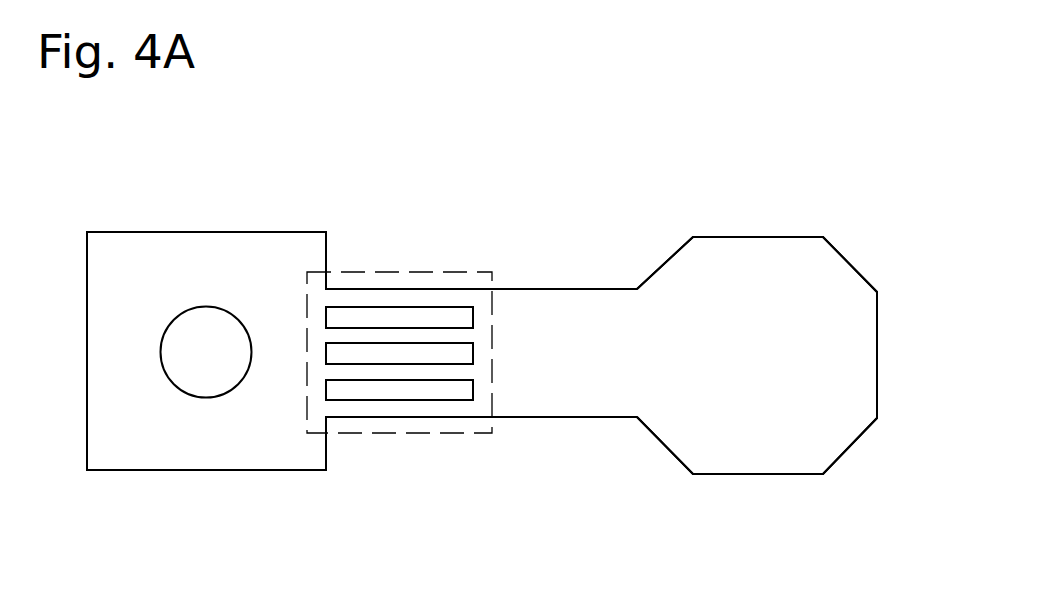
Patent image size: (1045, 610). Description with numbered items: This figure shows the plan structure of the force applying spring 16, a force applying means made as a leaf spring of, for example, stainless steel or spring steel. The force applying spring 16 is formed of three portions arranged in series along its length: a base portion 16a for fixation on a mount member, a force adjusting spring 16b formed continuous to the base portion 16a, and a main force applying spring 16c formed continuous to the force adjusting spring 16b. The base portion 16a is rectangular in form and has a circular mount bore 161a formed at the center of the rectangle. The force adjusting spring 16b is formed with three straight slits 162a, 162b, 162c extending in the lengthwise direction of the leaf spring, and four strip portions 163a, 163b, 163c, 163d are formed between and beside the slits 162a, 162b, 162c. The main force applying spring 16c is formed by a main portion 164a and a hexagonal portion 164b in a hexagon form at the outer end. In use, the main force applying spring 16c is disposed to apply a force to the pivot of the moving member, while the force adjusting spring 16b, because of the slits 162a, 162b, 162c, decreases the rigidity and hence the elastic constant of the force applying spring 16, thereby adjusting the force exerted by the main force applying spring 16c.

The force applying spring 16 is at (780, 135).
The base portion 16a is at (217, 253).
The force adjusting spring 16b is at (419, 273).
The main force applying spring 16c is at (650, 268).
The mount bore 161a is at (203, 372).
The slit 162a is at (430, 318).
The slit 162b is at (453, 355).
The slit 162c is at (423, 392).
The strip portion 163a is at (355, 300).
The strip portion 163b is at (353, 335).
The strip portion 163c is at (380, 368).
The strip portion 163d is at (410, 407).
The main portion 164a is at (557, 290).
The hexagonal portion 164b is at (798, 238).